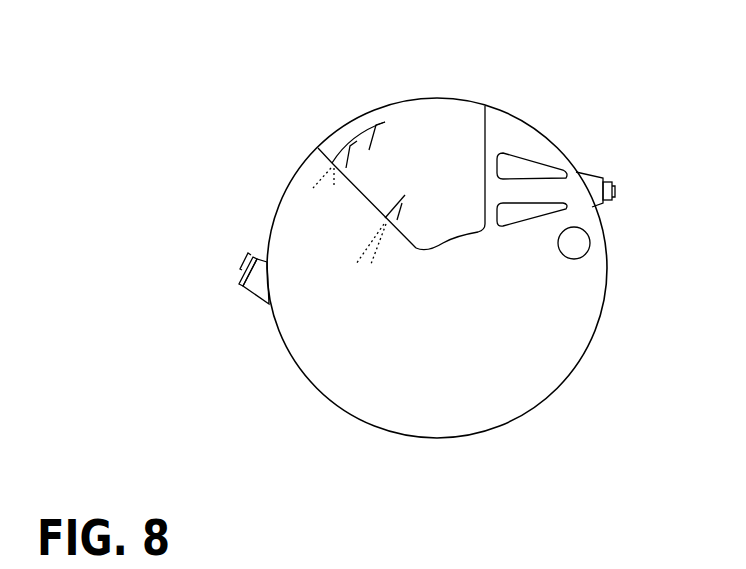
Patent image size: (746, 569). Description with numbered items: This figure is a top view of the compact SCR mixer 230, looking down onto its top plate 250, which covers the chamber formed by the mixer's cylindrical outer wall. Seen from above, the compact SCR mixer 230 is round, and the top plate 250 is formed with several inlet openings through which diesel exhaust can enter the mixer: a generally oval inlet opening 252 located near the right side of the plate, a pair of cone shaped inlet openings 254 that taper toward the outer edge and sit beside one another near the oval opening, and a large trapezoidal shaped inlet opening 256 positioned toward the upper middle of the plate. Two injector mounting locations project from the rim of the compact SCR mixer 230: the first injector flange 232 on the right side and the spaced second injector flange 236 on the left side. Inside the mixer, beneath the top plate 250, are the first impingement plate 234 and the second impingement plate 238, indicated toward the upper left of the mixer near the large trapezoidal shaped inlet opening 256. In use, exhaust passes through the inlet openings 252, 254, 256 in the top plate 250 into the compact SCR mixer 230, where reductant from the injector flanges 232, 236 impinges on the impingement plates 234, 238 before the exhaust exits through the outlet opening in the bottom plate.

The compact SCR mixer 230 is at (278, 384).
The first injector flange 232 is at (615, 189).
The first impingement plate 234 is at (385, 122).
The second injector flange 236 is at (257, 298).
The second impingement plate 238 is at (405, 195).
The top plate 250 is at (376, 368).
The generally oval inlet opening 252 is at (578, 243).
The pair of cone shaped inlet openings 254 is at (513, 212).
The large trapezoidal shaped inlet opening 256 is at (455, 130).